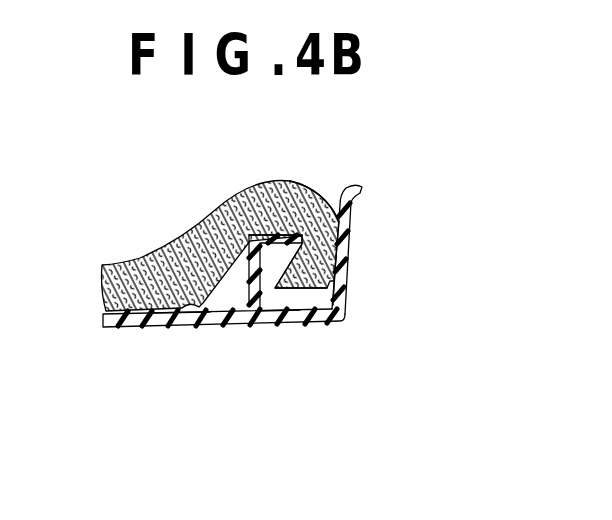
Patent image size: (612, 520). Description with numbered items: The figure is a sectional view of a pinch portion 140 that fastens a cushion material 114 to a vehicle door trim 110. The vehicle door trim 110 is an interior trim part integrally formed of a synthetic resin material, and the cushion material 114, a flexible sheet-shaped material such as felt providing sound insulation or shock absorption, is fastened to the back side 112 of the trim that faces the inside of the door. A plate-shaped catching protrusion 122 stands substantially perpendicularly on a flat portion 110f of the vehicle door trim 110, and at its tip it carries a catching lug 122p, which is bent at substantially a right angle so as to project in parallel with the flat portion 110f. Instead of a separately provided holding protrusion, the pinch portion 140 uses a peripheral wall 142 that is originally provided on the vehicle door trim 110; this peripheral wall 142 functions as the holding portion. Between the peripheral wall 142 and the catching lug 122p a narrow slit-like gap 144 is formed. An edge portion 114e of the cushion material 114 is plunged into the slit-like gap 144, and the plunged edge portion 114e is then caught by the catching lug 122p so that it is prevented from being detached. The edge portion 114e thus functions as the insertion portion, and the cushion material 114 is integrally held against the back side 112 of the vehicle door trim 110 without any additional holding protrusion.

The vehicle door trim 110 is at (124, 352).
The back side 112 is at (180, 314).
The flat portion 110f is at (275, 312).
The cushion material 114 is at (166, 232).
The edge portion 114e is at (305, 282).
The catching protrusion 122 is at (249, 283).
The catching lug 122p is at (282, 235).
The pinch portion 140 is at (384, 221).
The peripheral wall 142 is at (340, 279).
The slit-like gap 144 is at (307, 222).